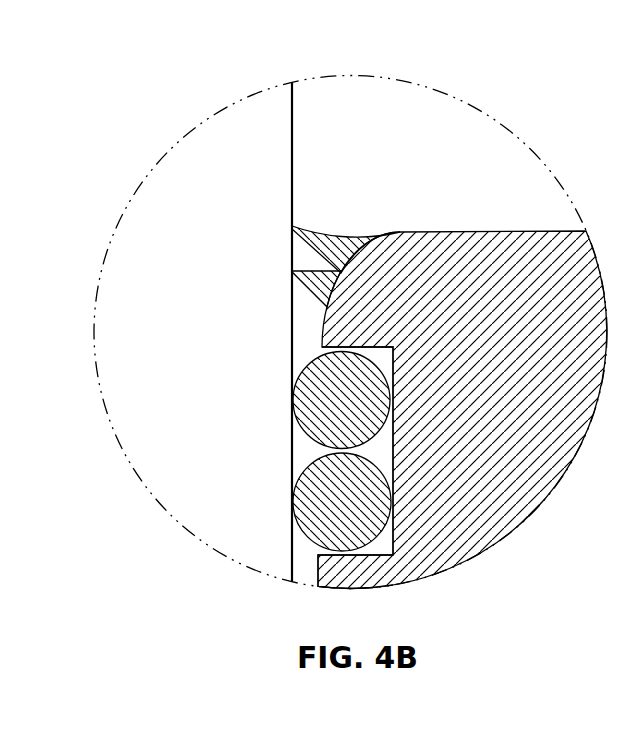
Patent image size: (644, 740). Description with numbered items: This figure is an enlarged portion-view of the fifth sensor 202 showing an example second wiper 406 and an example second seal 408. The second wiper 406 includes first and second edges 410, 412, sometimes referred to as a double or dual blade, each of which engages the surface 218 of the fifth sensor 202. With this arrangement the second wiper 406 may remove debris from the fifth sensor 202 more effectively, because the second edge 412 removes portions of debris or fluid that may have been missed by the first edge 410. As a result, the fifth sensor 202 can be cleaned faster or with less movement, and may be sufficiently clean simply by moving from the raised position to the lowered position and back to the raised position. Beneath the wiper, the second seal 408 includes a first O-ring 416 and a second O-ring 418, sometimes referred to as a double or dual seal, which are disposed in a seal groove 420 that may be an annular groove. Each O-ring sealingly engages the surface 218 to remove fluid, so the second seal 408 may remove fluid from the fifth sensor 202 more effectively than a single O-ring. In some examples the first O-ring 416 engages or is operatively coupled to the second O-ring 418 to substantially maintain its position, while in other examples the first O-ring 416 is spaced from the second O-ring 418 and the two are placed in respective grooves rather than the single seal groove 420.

The fifth sensor 202 is at (318, 107).
The surface 218 is at (197, 330).
The second wiper 406 is at (335, 223).
The second seal 408 is at (310, 552).
The first edge 410 is at (292, 220).
The second edge 412 is at (292, 263).
The first O-ring 416 is at (298, 433).
The second O-ring 418 is at (306, 537).
The seal groove 420 is at (388, 355).